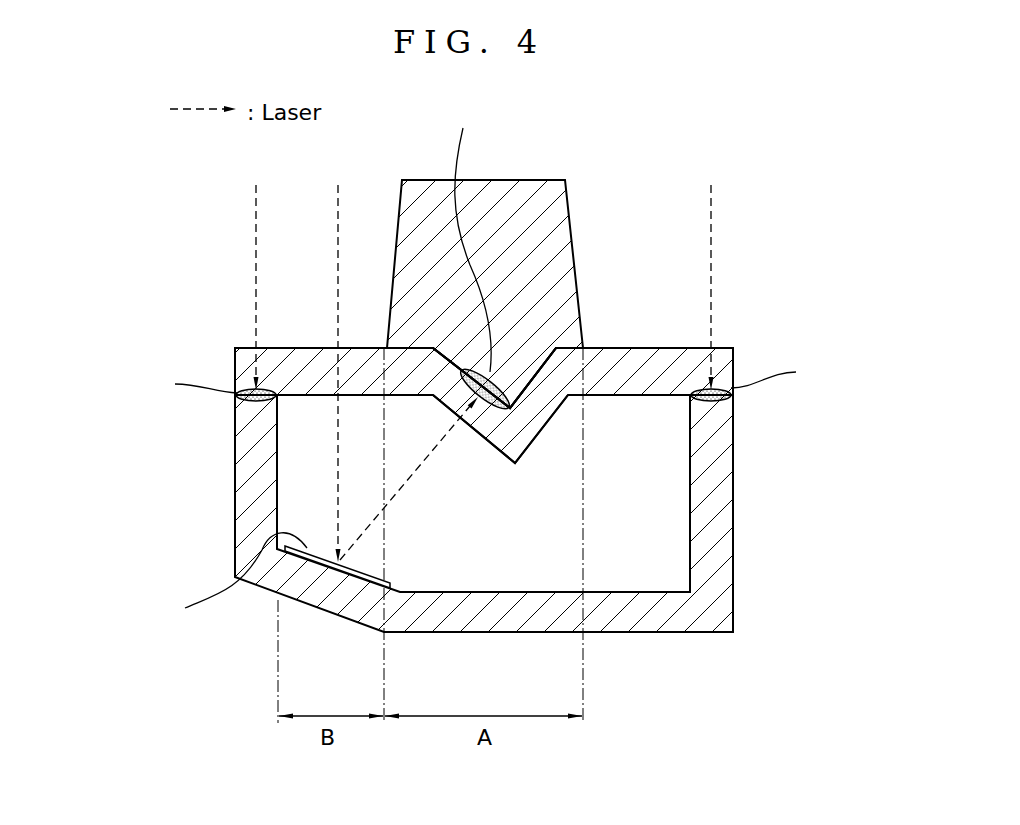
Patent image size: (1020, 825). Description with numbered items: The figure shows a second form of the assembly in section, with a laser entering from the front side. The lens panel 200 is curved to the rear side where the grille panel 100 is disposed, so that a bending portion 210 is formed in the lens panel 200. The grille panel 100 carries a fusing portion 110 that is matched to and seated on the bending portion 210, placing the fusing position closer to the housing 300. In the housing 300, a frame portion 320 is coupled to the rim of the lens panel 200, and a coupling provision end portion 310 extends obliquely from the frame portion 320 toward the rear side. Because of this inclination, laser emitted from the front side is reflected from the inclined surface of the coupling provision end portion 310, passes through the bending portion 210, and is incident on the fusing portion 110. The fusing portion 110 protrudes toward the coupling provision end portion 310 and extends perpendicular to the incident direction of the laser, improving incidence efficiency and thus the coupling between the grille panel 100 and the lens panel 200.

The grille panel 100 is at (545, 254).
The fusing portion 110 is at (517, 368).
The lens panel 200 is at (479, 323).
The bending portion 210 is at (487, 428).
The housing 300 is at (456, 546).
The coupling provision end portion 310 is at (333, 593).
The frame portion 320 is at (250, 440).